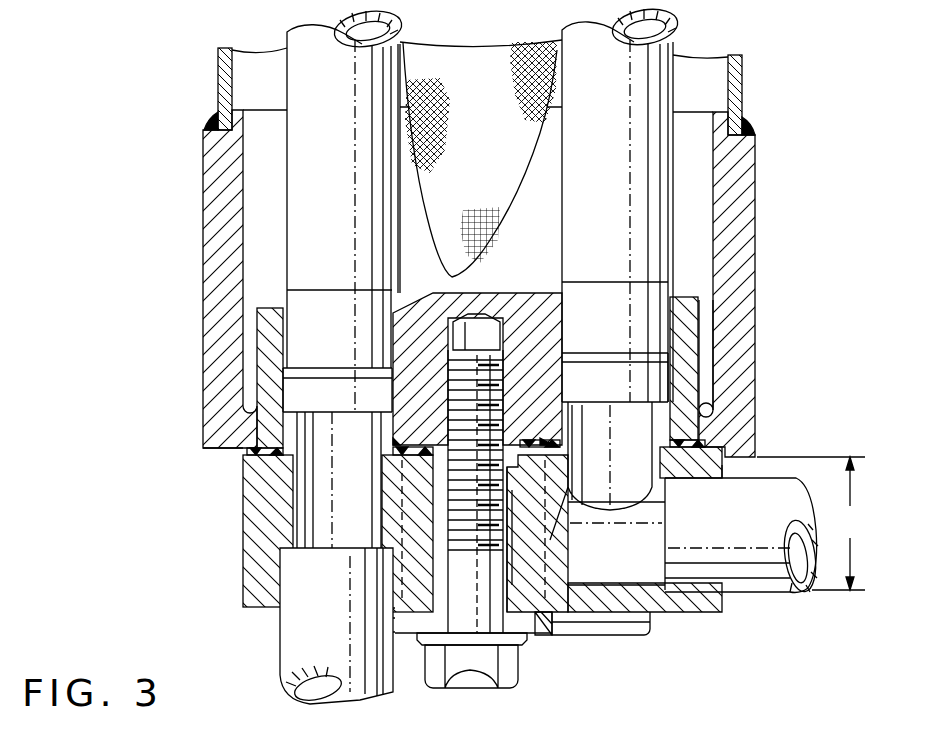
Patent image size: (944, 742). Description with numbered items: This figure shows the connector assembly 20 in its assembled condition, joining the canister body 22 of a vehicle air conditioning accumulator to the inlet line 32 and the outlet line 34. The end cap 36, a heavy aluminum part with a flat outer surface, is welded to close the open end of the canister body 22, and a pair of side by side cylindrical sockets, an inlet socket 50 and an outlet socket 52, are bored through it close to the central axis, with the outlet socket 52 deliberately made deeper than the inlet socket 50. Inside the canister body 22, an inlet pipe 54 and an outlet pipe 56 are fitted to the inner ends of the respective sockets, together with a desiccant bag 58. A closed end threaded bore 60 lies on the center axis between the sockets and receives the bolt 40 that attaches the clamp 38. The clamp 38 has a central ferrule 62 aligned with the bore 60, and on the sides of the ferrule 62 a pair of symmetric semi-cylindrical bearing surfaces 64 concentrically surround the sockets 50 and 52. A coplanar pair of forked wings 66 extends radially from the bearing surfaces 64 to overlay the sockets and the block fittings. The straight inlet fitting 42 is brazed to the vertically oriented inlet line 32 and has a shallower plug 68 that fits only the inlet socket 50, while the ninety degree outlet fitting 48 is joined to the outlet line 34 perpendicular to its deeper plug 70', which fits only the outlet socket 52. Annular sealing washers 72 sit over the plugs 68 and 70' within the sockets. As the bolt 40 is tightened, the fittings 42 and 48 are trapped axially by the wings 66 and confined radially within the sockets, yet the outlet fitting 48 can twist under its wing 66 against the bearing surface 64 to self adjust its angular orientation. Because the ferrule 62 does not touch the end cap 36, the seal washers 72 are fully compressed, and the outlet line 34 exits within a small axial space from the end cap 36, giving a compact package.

The connector assembly 20 is at (606, 662).
The canister body 22 is at (222, 83).
The inlet line 32 is at (287, 658).
The outlet line 34 is at (750, 586).
The end cap 36 is at (200, 352).
The clamp 38 is at (549, 638).
The bolt 40 is at (473, 628).
The straight inlet fitting 42 is at (242, 567).
The ninety degree outlet fitting 48 is at (698, 617).
The inlet socket 50 is at (262, 410).
The outlet socket 52 is at (660, 372).
The inlet pipe 54 is at (298, 195).
The outlet pipe 56 is at (657, 195).
The desiccant bag 58 is at (508, 205).
The threaded bore 60 is at (450, 357).
The ferrule 62 is at (512, 553).
The bearing surfaces 64 is at (425, 598).
The wings 66 is at (283, 632).
The plug 68 is at (203, 448).
The plug 70' is at (747, 365).
The annular sealing washers 72 is at (250, 470).